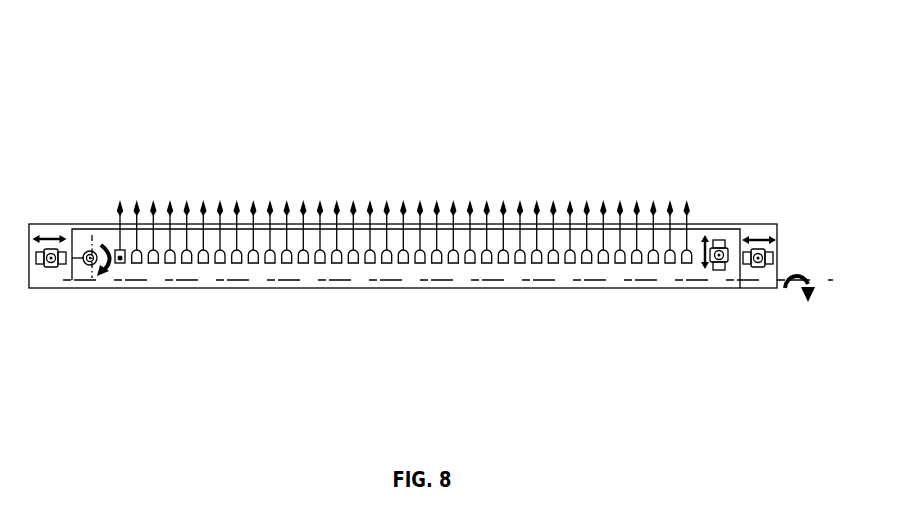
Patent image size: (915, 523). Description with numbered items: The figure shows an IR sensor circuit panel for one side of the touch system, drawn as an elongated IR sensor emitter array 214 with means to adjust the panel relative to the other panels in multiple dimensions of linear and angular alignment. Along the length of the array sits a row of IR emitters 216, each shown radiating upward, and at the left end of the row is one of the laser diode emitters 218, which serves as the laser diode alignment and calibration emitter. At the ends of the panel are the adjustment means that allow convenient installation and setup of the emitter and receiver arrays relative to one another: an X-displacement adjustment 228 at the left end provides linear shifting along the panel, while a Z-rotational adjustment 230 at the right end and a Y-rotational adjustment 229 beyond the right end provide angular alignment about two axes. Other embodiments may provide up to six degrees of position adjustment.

The IR sensor emitter array 214 is at (342, 306).
The IR emitters 216 is at (453, 252).
The laser diode emitters 218 is at (121, 252).
The X-displacement adjustment 228 is at (52, 268).
The Y-rotational adjustment 229 is at (798, 300).
The Z-rotational adjustment 230 is at (727, 245).